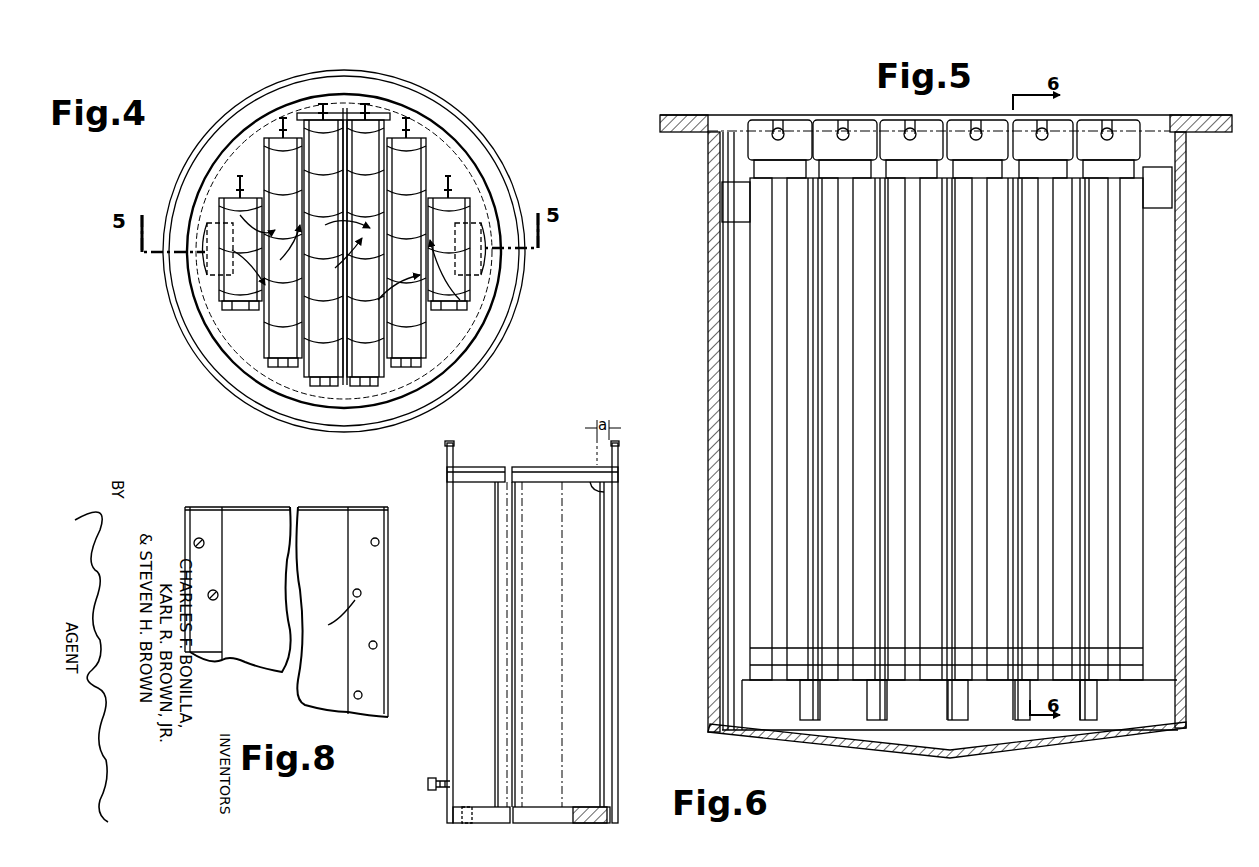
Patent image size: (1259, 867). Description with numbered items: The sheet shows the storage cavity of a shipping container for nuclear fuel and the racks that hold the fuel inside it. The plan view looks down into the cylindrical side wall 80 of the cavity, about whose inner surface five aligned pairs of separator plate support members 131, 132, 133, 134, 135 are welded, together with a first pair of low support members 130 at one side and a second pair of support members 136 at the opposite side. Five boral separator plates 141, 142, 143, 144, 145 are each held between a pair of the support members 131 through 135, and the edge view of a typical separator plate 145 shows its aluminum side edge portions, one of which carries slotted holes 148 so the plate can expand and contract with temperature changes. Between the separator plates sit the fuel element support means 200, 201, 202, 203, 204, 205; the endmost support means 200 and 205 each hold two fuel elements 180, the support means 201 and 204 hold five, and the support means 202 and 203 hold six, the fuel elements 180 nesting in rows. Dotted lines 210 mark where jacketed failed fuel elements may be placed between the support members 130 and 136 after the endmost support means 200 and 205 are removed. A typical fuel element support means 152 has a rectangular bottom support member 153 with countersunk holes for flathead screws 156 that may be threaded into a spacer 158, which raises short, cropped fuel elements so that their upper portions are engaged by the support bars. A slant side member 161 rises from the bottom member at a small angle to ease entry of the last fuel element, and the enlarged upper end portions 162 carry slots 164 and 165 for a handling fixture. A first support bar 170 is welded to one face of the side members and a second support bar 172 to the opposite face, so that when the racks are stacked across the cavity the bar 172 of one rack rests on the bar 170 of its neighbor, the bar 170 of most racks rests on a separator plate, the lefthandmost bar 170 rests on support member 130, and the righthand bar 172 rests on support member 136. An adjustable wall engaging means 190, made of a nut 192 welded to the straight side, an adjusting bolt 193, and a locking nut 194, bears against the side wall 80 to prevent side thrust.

In FIG. 4, the cylindrical member 80 is at (344, 251).
In FIG. 5, the cylindrical member 80 is at (710, 335).
In FIG. 4, the separator plate support members 130 is at (220, 215).
In FIG. 5, the separator plate support members 130 is at (730, 185).
In FIG. 4, the separator plate support member 131 is at (240, 150).
In FIG. 5, the separator plate support member 131 is at (800, 692).
In FIG. 4, the separator plate support member 132 is at (298, 118).
In FIG. 5, the separator plate support member 132 is at (868, 692).
In FIG. 4, the separator plate support member 133 is at (360, 105).
In FIG. 5, the separator plate support member 133 is at (960, 700).
In FIG. 4, the separator plate support member 134 is at (398, 130).
In FIG. 5, the separator plate support member 134 is at (1028, 700).
In FIG. 4, the separator plate support member 135 is at (438, 150).
In FIG. 5, the separator plate support member 135 is at (1098, 695).
In FIG. 8, the separator plate support member 135 is at (200, 660).
In FIG. 4, the separator plate support members 136 is at (475, 205).
In FIG. 5, the separator plate support members 136 is at (1165, 175).
In FIG. 5, the separator plate 141 is at (812, 262).
In FIG. 5, the separator plate 142 is at (880, 282).
In FIG. 5, the separator plate 143 is at (946, 270).
In FIG. 5, the separator plate 144 is at (1012, 246).
In FIG. 5, the separator plate 145 is at (1078, 254).
In FIG. 8, the separator plate 145 is at (197, 520).
In FIG. 8, the slotted holes 148 is at (371, 545).
In FIG. 6, the fuel element support means 152 is at (620, 606).
In FIG. 5, the bottom support member 153 is at (745, 690).
In FIG. 6, the bottom support member 153 is at (485, 815).
In FIG. 6, the flathead screws 156 is at (463, 820).
In FIG. 5, the spacer 158 is at (760, 665).
In FIG. 6, the spacer 158 is at (530, 805).
In FIG. 5, the side member 161 is at (795, 355).
In FIG. 6, the side member 161 is at (606, 660).
In FIG. 5, the upper end portion / straight side member 162 is at (815, 122).
In FIG. 6, the upper end portion / straight side member 162 is at (448, 640).
In FIG. 5, the slot 164 is at (1095, 125).
In FIG. 6, the slot 164 is at (618, 458).
In FIG. 6, the slot 165 is at (454, 460).
In FIG. 5, the first support bar 170 is at (880, 168).
In FIG. 6, the first support bar 170 is at (604, 490).
In FIG. 5, the second support bar 172 is at (1076, 170).
In FIG. 6, the second support bar 172 is at (612, 470).
In FIG. 4, the fuel element 180 is at (346, 257).
In FIG. 5, the fuel element 180 is at (765, 530).
In FIG. 6, the fuel element 180 is at (470, 572).
In FIG. 4, the adjustable wall engaging means 190 is at (240, 170).
In FIG. 6, the adjustable wall engaging means 190 is at (420, 790).
In FIG. 6, the nut 192 is at (445, 790).
In FIG. 6, the adjusting bolt 193 is at (432, 778).
In FIG. 6, the locking nut 194 is at (442, 778).
In FIG. 4, the fuel element support means 200 is at (262, 290).
In FIG. 4, the fuel element support means 201 is at (285, 365).
In FIG. 4, the fuel element support means 202 is at (318, 392).
In FIG. 4, the fuel element support means 203 is at (372, 392).
In FIG. 4, the fuel element support means 204 is at (430, 360).
In FIG. 4, the fuel element support means 205 is at (450, 312).
In FIG. 4, the failed fuel elements (dotted line positions) 210 is at (208, 230).